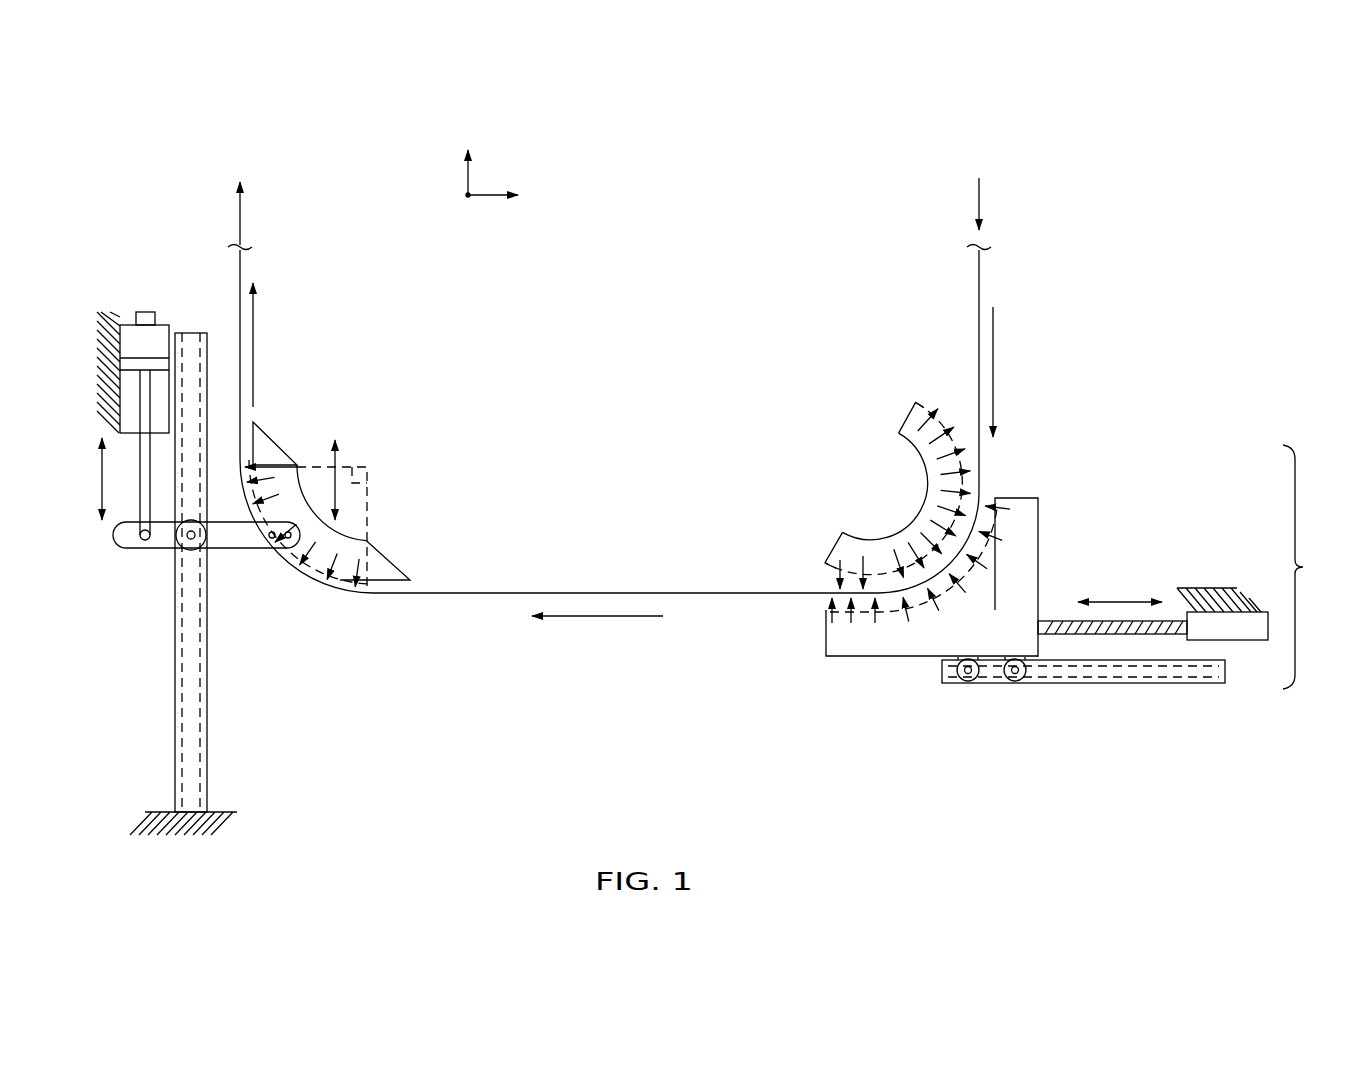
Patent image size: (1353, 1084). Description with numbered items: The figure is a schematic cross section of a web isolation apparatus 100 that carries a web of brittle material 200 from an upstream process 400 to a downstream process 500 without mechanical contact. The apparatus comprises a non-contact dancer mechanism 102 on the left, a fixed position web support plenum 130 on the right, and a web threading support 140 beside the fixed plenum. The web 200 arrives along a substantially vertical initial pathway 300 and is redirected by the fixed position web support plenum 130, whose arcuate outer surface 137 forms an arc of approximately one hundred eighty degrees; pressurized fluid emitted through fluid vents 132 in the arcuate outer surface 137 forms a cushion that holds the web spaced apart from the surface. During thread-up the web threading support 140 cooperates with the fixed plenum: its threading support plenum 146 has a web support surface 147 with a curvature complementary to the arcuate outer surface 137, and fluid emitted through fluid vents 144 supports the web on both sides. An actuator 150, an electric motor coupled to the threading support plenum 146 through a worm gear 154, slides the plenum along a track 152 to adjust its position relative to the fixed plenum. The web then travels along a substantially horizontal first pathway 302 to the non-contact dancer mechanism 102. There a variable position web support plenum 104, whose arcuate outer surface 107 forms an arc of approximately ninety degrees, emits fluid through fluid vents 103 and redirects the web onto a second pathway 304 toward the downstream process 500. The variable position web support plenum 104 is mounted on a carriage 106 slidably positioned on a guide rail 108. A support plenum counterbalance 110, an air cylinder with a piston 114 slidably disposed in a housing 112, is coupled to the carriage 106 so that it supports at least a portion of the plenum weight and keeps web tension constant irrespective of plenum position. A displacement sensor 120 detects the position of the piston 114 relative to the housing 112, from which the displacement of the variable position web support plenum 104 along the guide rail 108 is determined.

The web isolation apparatus 100 is at (735, 168).
The non-contact dancer mechanism 102 is at (415, 395).
The fluid vents 103 is at (262, 445).
The variable position web support plenum 104 is at (392, 472).
The carriage 106 is at (112, 535).
The arcuate outer surface 107 is at (388, 598).
The guide rail 108 is at (207, 704).
The support plenum counterbalance 110 is at (108, 300).
The housing 112 is at (110, 432).
The piston 114 is at (150, 357).
The displacement sensor 120 is at (145, 311).
The fixed position web support plenum 130 is at (858, 495).
The fluid vents 132 is at (867, 572).
The arcuate outer surface 137 is at (920, 405).
The web threading support 140 is at (1089, 584).
The fluid vents 144 is at (982, 545).
The threading support plenum 146 is at (1085, 500).
The web support surface 147 is at (895, 600).
The actuator 150 is at (1238, 642).
The track 152 is at (1103, 683).
The worm gear 154 is at (1055, 620).
The web of brittle material 200 is at (250, 260).
The initial pathway 300 is at (993, 372).
The first pathway 302 is at (603, 620).
The second pathway 304 is at (255, 365).
The upstream process 400 is at (979, 203).
The downstream process 500 is at (240, 203).